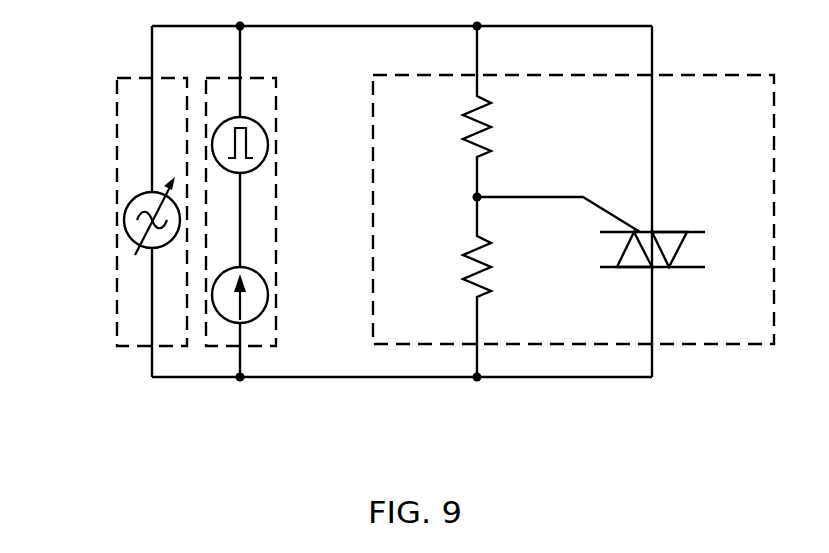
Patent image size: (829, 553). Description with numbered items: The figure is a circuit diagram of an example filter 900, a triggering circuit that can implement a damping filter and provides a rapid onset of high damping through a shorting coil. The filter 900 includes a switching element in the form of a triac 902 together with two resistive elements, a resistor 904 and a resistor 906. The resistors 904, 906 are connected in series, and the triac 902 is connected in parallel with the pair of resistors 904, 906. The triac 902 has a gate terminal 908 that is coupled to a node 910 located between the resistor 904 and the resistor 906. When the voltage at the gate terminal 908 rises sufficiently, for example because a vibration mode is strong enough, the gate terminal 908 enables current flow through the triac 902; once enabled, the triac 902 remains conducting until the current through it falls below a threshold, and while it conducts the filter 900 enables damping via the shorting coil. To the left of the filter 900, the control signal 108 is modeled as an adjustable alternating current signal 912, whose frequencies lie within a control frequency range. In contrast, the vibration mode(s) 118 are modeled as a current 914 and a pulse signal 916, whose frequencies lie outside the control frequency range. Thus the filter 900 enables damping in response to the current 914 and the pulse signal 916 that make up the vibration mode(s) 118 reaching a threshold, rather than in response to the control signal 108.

The control signal 108 is at (111, 197).
The adjustable alternating current signal 912 is at (115, 215).
The vibration mode(s) 118 is at (282, 213).
The pulse signal 916 is at (280, 144).
The current 914 is at (280, 287).
The filter 900 is at (531, 189).
The resistor 904 is at (437, 126).
The resistor 906 is at (438, 266).
The node 910 is at (437, 184).
The gate terminal 908 is at (558, 200).
The triac 902 is at (680, 235).